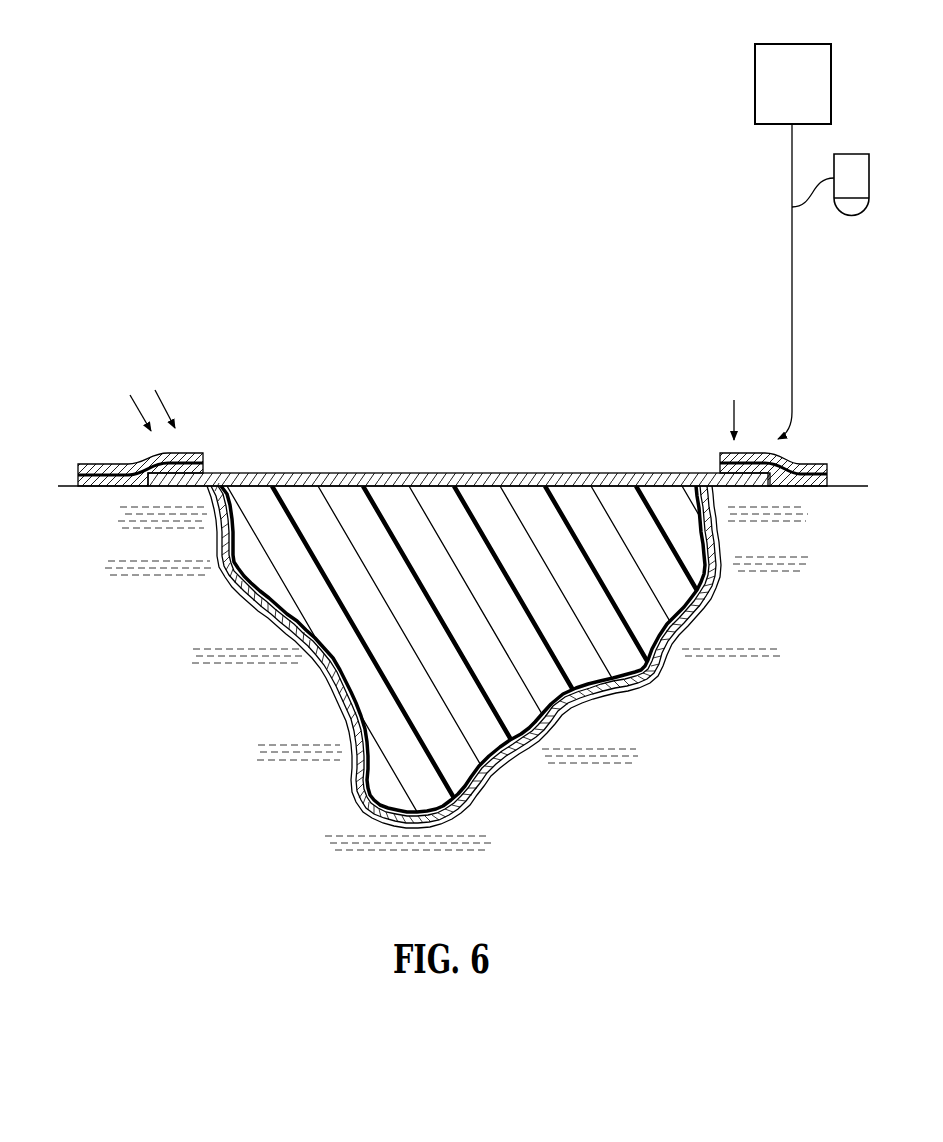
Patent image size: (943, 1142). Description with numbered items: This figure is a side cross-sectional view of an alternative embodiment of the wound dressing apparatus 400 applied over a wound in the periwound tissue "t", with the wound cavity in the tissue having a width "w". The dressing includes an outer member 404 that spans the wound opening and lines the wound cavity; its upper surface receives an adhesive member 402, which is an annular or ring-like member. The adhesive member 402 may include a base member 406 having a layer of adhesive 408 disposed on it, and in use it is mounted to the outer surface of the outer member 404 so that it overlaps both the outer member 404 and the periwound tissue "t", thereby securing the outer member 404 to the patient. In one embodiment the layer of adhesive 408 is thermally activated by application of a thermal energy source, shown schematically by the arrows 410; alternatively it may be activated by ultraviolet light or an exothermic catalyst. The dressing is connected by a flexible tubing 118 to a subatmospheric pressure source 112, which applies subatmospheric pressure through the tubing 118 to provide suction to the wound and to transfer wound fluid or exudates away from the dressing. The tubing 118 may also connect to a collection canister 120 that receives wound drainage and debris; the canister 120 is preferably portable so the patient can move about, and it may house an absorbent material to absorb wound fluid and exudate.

The subatmospheric pressure source 112 is at (798, 60).
The flexible tubing 118 is at (792, 278).
The collection canister 120 is at (850, 153).
The wound dressing apparatus 400 is at (278, 416).
The adhesive member 402 is at (68, 465).
The outer member 404 is at (312, 473).
The base member 406 is at (97, 468).
The layer of adhesive 408 is at (105, 477).
The arrows 410 is at (160, 391).
The periwound tissue t is at (793, 490).
The wound width w is at (713, 608).